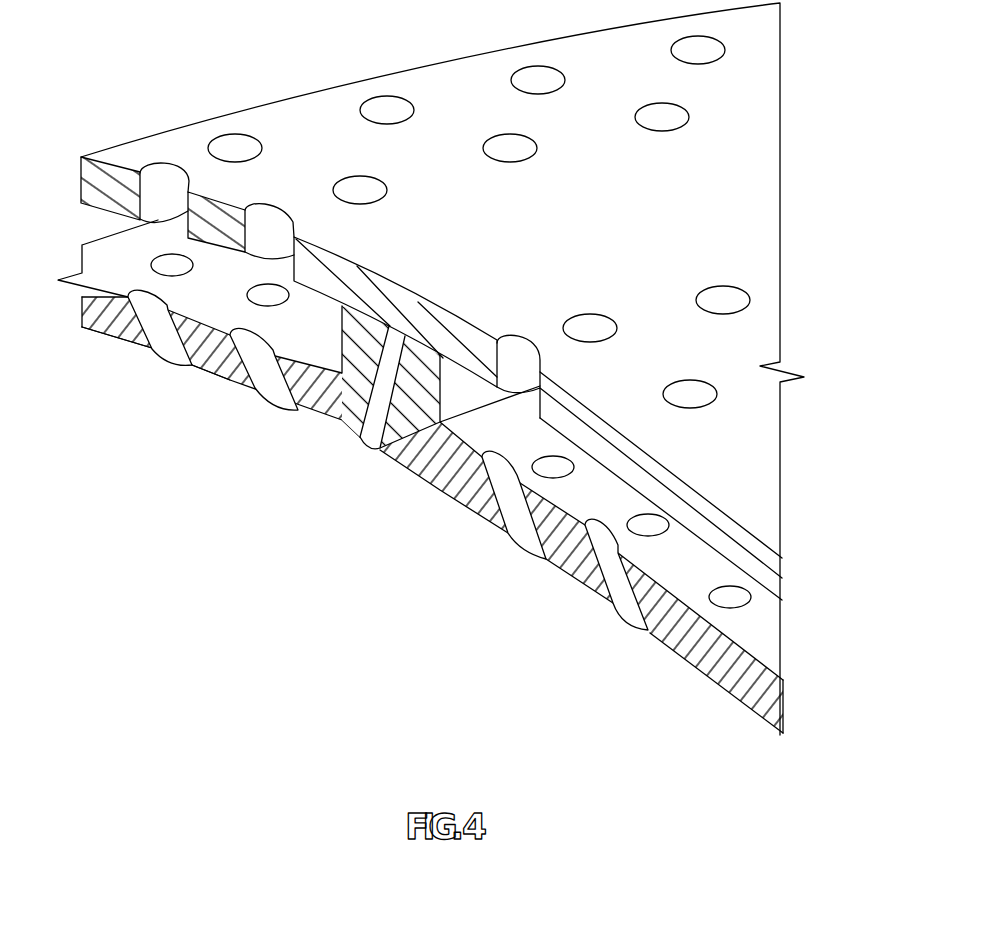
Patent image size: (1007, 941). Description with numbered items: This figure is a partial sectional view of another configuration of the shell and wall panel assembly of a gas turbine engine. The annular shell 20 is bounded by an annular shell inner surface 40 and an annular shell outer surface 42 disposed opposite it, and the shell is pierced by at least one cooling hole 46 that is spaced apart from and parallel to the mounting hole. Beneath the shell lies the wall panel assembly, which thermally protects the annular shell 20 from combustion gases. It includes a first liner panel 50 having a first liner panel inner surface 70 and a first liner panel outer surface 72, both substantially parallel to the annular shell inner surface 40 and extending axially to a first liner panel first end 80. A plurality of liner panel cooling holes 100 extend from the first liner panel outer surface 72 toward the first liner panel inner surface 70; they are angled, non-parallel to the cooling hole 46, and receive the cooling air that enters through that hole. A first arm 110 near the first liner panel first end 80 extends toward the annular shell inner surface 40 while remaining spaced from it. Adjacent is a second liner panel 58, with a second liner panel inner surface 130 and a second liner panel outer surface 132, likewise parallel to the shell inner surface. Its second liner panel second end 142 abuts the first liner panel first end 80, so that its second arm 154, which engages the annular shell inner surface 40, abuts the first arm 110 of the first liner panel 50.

The annular shell 20 is at (755, 175).
The annular shell inner surface 40 is at (95, 207).
The annular shell outer surface 42 is at (107, 163).
The cooling hole 46 is at (175, 182).
The first liner panel 50 is at (707, 686).
The second liner panel 58 is at (106, 338).
The first liner panel inner surface 70 is at (748, 713).
The first liner panel outer surface 72 is at (753, 656).
The first liner panel first end 80 is at (397, 425).
The liner panel cooling holes 100 is at (275, 378).
The first arm 110 is at (422, 395).
The second liner panel inner surface 130 is at (203, 368).
The second liner panel outer surface 132 is at (205, 320).
The second liner panel second end 142 is at (365, 400).
The second arm 154 is at (360, 352).